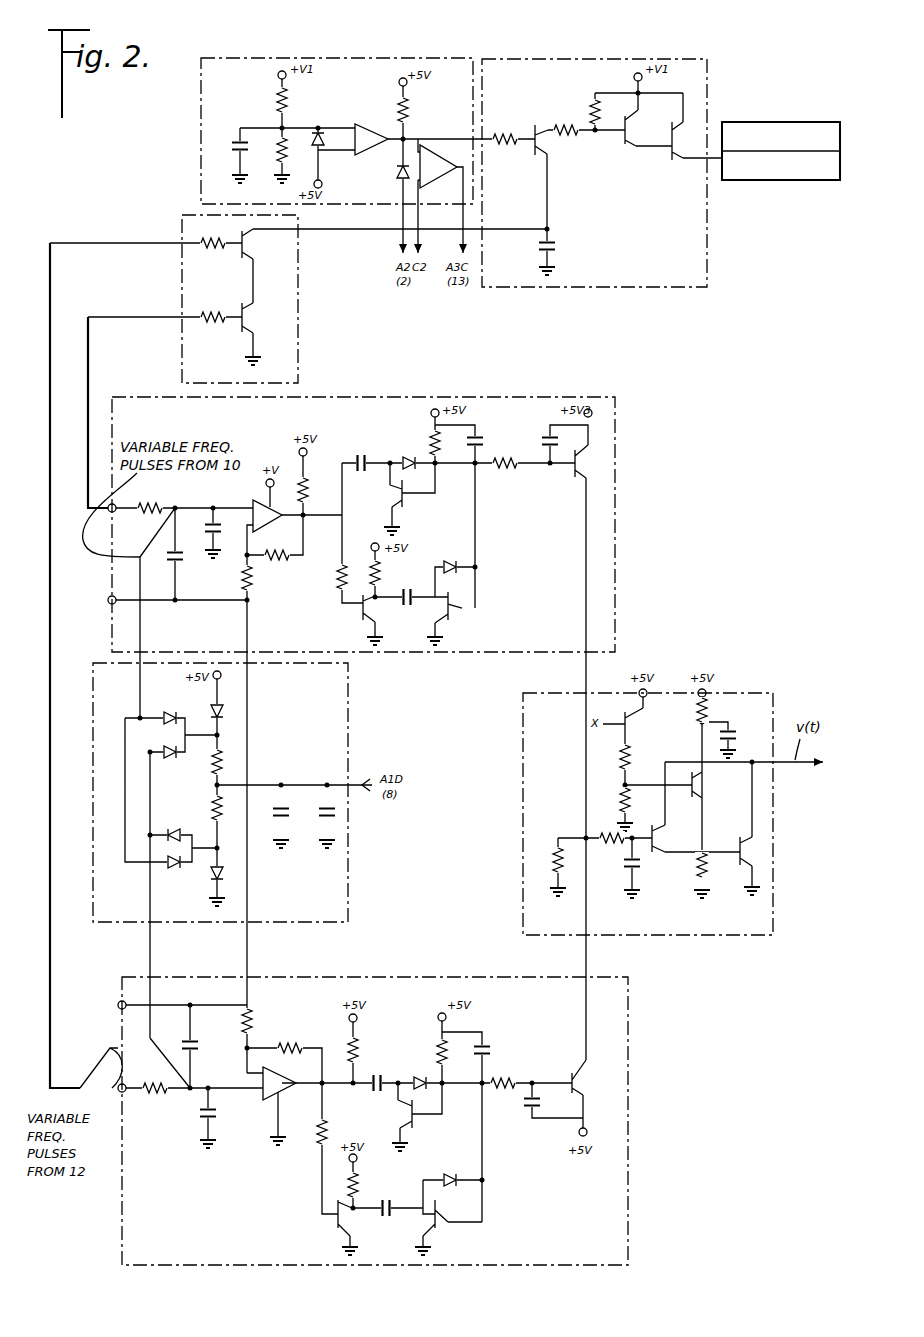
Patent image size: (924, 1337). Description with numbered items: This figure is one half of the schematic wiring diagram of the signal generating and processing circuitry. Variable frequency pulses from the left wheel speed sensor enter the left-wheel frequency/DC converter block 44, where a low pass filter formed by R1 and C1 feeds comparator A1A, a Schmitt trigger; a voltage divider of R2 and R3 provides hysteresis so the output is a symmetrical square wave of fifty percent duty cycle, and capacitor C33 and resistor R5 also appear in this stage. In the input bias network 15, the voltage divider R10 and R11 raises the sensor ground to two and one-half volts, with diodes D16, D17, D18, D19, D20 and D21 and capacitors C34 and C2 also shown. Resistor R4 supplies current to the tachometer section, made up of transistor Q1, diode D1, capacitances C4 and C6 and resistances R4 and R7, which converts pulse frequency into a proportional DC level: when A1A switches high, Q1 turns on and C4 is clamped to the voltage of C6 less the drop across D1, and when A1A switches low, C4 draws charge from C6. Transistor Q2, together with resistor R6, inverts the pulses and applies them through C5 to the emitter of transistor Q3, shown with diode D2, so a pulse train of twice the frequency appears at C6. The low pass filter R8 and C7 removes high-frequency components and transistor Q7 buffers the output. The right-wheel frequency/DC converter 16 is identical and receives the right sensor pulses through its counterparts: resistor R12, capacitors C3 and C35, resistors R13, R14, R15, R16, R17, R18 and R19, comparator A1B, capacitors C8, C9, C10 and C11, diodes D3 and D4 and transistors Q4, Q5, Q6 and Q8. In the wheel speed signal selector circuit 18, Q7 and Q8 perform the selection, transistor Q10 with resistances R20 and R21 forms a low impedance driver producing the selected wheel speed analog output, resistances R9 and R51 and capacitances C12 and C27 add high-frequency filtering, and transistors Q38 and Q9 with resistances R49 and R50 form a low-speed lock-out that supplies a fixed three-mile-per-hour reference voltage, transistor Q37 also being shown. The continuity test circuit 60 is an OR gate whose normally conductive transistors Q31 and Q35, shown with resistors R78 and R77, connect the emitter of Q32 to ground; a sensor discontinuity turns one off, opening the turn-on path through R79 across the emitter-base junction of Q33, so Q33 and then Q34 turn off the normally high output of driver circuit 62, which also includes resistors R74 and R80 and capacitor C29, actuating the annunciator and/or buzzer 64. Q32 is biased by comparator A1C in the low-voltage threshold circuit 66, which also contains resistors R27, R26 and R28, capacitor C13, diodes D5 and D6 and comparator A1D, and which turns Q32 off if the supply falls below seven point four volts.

The low-voltage threshold circuit 66 is at (200, 78).
The driver circuit 62 is at (551, 288).
The continuity test circuit 60 is at (300, 333).
The warning circuit 64 is at (757, 121).
The first pulse shaping circuit 44 is at (565, 394).
The input bias network 15 is at (352, 690).
The wheel speed signal selector circuit 18 is at (772, 691).
The frequency/DC converter 16 is at (372, 975).
The resistor R27 is at (290, 101).
The capacitor C13 is at (234, 147).
The resistor R26 is at (276, 152).
The diode D5 is at (310, 144).
The comparator A1C is at (370, 161).
The resistor R28 is at (412, 103).
The diode D6 is at (398, 176).
The comparator A1D is at (439, 174).
The resistor R74 is at (504, 132).
The transistor Q32 is at (545, 145).
The resistance R79 is at (563, 119).
The resistor R80 is at (600, 93).
The transistor Q33 is at (649, 126).
The transistor Q34 is at (681, 161).
The capacitor C29 is at (560, 249).
The resistor R78 is at (205, 252).
The transistor Q31 is at (255, 242).
The resistor R77 is at (205, 328).
The transistor Q35 is at (254, 318).
The resistance R1 is at (155, 504).
The capacitance C1 is at (168, 566).
The capacitor C33 is at (209, 553).
The comparator A1A is at (270, 516).
The resistance R2 is at (252, 589).
The resistance R3 is at (274, 561).
The resistance R4 is at (309, 486).
The resistor R5 is at (336, 578).
The capacitance C4 is at (364, 455).
The diode D1 is at (410, 455).
The transistor Q1 is at (397, 495).
The resistance R7 is at (430, 433).
The capacitance C6 is at (481, 436).
The resistance R8 is at (510, 474).
The capacitance C7 is at (546, 441).
The transistor Q7 is at (582, 463).
The transistor Q2 is at (358, 619).
The resistor R6 is at (382, 582).
The capacitance C5 is at (408, 606).
The transistor Q3 is at (452, 621).
The diode D2 is at (452, 561).
The diode D18 is at (212, 712).
The diode D16 is at (172, 712).
The resistance R10 is at (211, 773).
The diode D17 is at (174, 762).
The resistance R11 is at (212, 806).
The diode D19 is at (174, 824).
The diode D20 is at (174, 877).
The diode D21 is at (212, 882).
The capacitor C34 is at (275, 832).
The capacitor C2 is at (317, 832).
The transistor Q38 is at (625, 717).
The resistance R49 is at (632, 756).
The resistance R50 is at (620, 800).
The resistance R21 is at (696, 712).
The capacitance C12 is at (731, 728).
The transistor Q9 is at (704, 786).
The transistor Q37 is at (675, 831).
The transistor Q10 is at (738, 841).
The resistance R20 is at (697, 876).
The resistance R51 is at (616, 860).
The capacitance C27 is at (645, 876).
The resistance R9 is at (555, 849).
The capacitor C3 is at (181, 1044).
The resistor R13 is at (254, 1020).
The resistor R14 is at (290, 1041).
The resistor R12 is at (150, 1100).
The capacitor C35 is at (196, 1126).
The comparator A1B is at (268, 1101).
The resistor R17 is at (315, 1141).
The resistor R15 is at (358, 1046).
The capacitor C8 is at (379, 1071).
The transistor Q4 is at (408, 1114).
The diode D3 is at (422, 1075).
The resistor R16 is at (440, 1046).
The capacitor C10 is at (486, 1045).
The diode D4 is at (452, 1172).
The resistor R19 is at (510, 1075).
The capacitor C11 is at (525, 1101).
The transistor Q8 is at (586, 1075).
The transistor Q5 is at (335, 1226).
The resistor R18 is at (360, 1180).
The capacitor C9 is at (388, 1201).
The transistor Q6 is at (420, 1229).